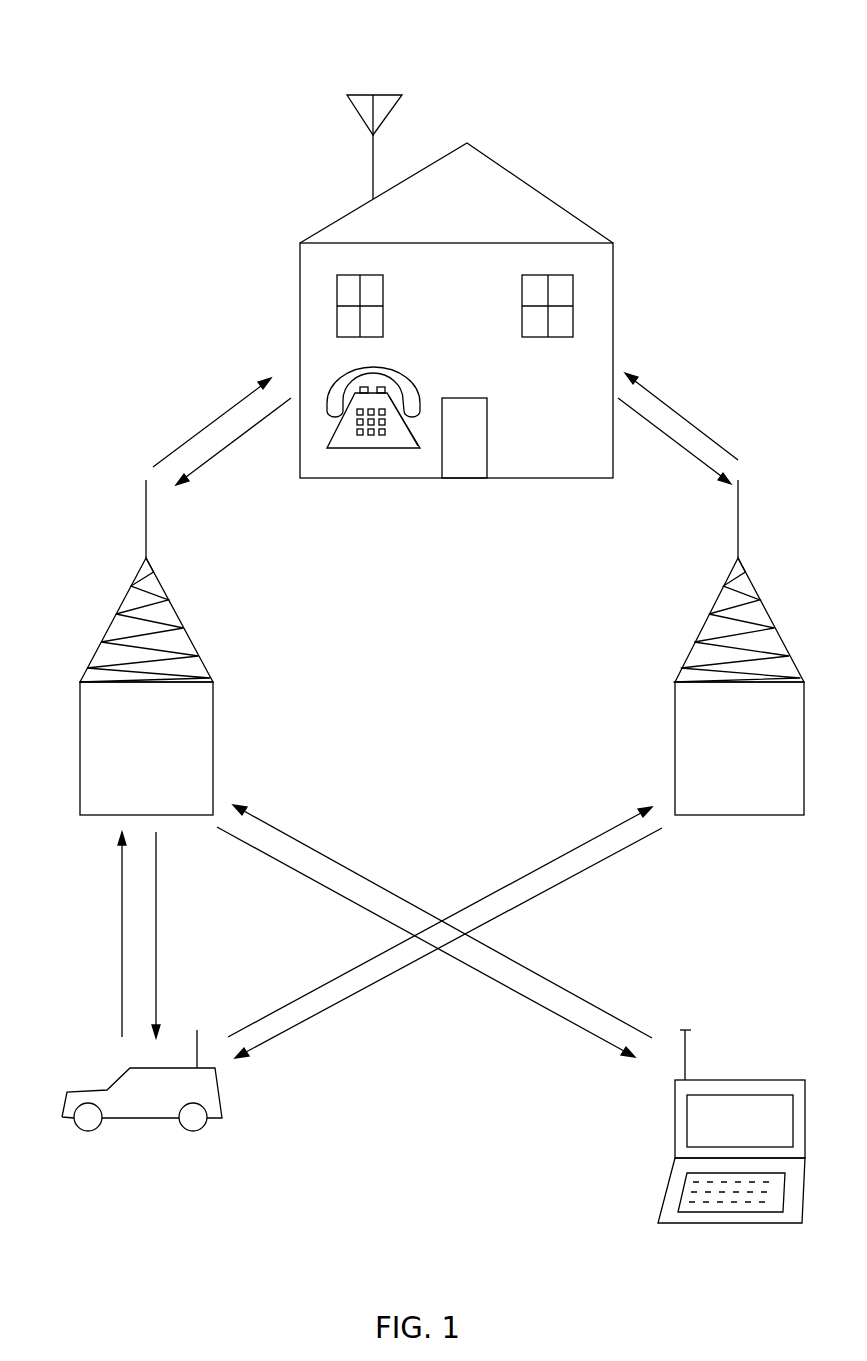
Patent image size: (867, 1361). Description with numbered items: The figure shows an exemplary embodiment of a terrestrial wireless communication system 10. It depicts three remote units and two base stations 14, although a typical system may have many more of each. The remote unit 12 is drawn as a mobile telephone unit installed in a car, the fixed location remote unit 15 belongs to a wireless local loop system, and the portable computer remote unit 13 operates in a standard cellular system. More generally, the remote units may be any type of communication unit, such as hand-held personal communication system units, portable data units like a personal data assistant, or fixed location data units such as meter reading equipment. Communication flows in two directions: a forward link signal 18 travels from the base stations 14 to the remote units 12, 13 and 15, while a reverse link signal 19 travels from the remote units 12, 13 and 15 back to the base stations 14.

The terrestrial wireless communication system 10 is at (663, 53).
The remote unit 12 is at (85, 1088).
The portable computer remote unit 13 is at (780, 1078).
The base station 14 is at (115, 615).
The fixed location remote unit 15 is at (535, 188).
The forward link signal 18 is at (227, 407).
The reverse link signal 19 is at (249, 433).